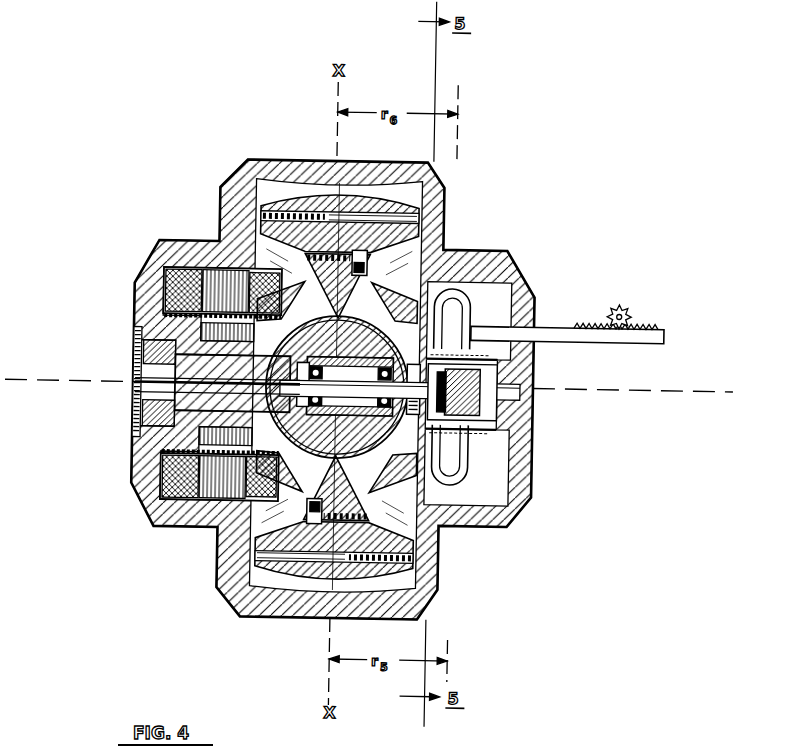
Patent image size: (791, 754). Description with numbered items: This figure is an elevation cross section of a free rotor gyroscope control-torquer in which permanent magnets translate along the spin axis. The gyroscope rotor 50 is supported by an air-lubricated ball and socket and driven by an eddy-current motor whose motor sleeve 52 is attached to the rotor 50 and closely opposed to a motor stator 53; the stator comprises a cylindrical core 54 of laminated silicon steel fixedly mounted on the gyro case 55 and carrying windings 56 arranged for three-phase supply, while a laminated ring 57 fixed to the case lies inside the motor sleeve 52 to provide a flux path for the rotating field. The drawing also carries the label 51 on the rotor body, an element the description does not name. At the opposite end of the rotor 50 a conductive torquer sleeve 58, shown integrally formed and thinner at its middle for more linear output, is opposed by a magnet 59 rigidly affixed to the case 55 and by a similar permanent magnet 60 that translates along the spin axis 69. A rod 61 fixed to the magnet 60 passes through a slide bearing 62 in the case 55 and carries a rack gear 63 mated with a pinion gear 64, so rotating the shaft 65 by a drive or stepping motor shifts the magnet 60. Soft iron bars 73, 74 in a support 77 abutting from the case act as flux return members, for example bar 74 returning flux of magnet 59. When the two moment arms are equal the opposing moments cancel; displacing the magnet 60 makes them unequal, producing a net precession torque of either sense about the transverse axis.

The gyroscope rotor 50 is at (436, 188).
The spherical rotor 51 is at (343, 319).
The motor sleeve 52 is at (236, 338).
The motor stator 53 is at (178, 310).
The cylindrical core 54 is at (231, 272).
The gyro case 55 is at (156, 282).
The windings 56 is at (178, 302).
The ring 57 is at (281, 332).
The torquer sleeve 58 is at (498, 356).
The magnet 59 is at (464, 457).
The permanent magnet 60 is at (462, 318).
The rod 61 is at (548, 330).
The slide bearing 62 is at (512, 322).
The rack gear 63 is at (653, 330).
The pinion gear 64 is at (627, 308).
The shaft 65 is at (615, 308).
The spin axis 69 is at (66, 382).
The soft iron bar 73 is at (500, 397).
The soft iron bar 74 is at (498, 420).
The support 77 is at (498, 374).